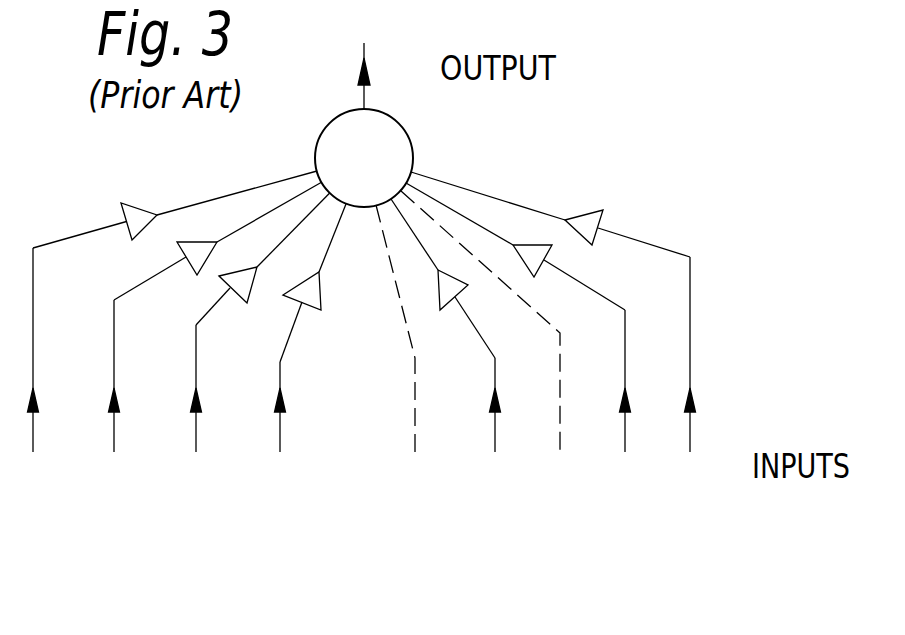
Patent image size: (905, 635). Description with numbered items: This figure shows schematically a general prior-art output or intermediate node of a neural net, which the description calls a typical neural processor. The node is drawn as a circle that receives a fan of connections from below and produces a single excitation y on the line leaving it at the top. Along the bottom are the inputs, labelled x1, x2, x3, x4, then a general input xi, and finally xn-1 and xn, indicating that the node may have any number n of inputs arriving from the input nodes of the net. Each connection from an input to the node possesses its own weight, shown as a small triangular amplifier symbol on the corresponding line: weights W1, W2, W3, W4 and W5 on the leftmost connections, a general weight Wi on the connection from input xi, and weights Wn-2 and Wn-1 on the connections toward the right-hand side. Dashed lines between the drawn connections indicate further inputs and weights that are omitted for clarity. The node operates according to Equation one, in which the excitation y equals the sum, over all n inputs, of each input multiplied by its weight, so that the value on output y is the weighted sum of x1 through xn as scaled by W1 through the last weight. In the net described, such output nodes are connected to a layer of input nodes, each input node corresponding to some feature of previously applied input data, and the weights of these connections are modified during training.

The output excitation y is at (364, 125).
The connection weight W1 is at (175, 207).
The connection weight W2 is at (207, 241).
The connection weight W3 is at (188, 292).
The connection weight W4 is at (263, 268).
The connection weight W5 is at (313, 283).
The connection weight Wi is at (443, 278).
The connection weight Wn-1 is at (515, 248).
The connection weight Wn-2 is at (550, 230).
The input signal x1 is at (42, 369).
The input signal x2 is at (122, 395).
The input signal x3 is at (204, 408).
The input signal x4 is at (287, 426).
The input signal xi is at (500, 424).
The input signal xn-1 is at (631, 400).
The input signal xn is at (698, 374).